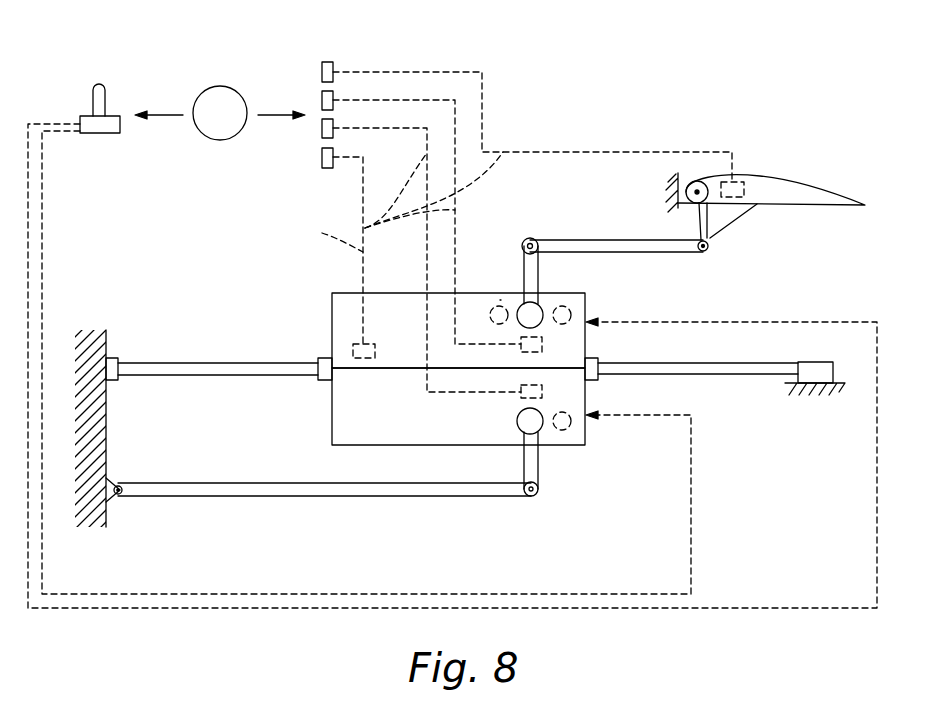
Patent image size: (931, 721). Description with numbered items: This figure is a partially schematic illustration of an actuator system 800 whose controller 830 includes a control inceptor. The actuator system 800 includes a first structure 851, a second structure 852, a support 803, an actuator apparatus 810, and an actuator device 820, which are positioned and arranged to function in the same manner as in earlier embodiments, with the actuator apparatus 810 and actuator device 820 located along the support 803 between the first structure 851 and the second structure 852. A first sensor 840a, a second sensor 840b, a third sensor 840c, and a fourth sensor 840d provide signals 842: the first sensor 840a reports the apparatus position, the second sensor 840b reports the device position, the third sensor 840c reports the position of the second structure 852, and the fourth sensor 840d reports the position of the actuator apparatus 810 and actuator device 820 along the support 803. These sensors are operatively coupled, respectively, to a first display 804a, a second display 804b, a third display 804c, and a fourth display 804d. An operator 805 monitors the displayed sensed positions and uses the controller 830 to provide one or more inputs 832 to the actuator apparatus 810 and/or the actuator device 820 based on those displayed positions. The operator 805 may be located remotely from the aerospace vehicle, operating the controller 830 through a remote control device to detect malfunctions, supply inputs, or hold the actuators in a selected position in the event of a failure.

The actuator system 800 is at (560, 122).
The support 803 is at (742, 375).
The first display 804a is at (318, 97).
The second display 804b is at (320, 132).
The third display 804c is at (322, 70).
The fourth display 804d is at (320, 165).
The operator 805 is at (205, 90).
The actuator apparatus 810 is at (318, 325).
The actuator device 820 is at (318, 420).
The controller 830 is at (93, 100).
The inputs 832 is at (237, 608).
The first sensor 840a is at (542, 344).
The second sensor 840b is at (521, 398).
The third sensor 840c is at (748, 183).
The fourth sensor 840d is at (372, 345).
The signals 842 is at (365, 228).
The first structure 851 is at (668, 187).
The second structure 852 is at (805, 188).